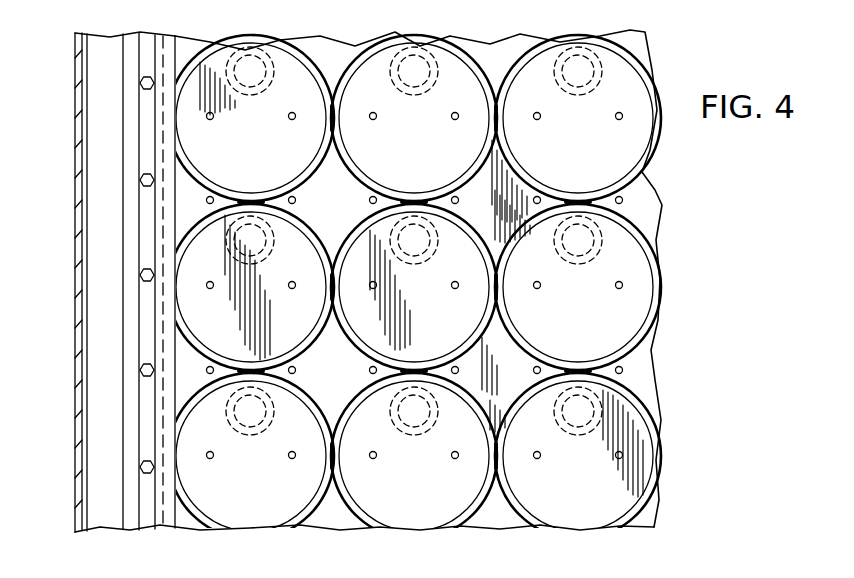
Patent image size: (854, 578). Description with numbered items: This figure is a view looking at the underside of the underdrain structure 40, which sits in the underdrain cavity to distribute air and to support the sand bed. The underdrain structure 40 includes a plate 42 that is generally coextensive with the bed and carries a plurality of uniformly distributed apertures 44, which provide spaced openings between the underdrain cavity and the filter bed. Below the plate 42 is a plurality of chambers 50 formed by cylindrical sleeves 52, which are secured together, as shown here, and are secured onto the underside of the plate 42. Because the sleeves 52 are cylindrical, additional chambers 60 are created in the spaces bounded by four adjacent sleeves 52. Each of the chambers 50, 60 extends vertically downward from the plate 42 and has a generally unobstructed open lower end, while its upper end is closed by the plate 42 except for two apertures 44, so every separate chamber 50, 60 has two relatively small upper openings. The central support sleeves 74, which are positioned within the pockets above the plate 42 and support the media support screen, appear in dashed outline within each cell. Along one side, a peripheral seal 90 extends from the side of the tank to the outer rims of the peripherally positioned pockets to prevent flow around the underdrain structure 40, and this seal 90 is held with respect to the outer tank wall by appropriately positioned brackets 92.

The underdrain structure 40 is at (682, 59).
The plate 42 is at (503, 510).
The apertures 44 is at (214, 118).
The chambers 50 is at (298, 78).
The sleeves 52 is at (508, 57).
The additional chambers 60 is at (323, 165).
The central support sleeve 74 is at (425, 93).
The peripheral seal 90 is at (130, 220).
The brackets 92 is at (100, 177).